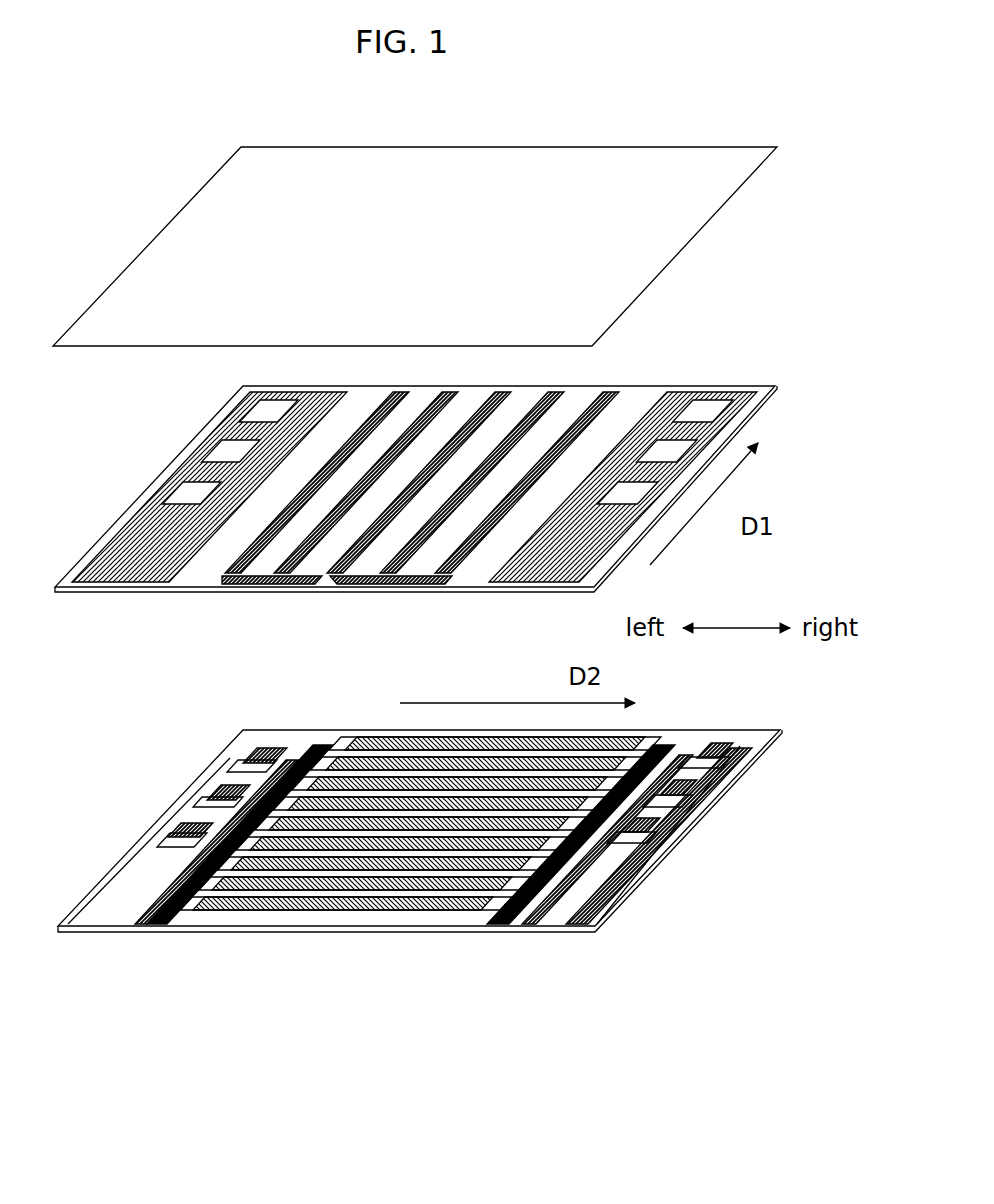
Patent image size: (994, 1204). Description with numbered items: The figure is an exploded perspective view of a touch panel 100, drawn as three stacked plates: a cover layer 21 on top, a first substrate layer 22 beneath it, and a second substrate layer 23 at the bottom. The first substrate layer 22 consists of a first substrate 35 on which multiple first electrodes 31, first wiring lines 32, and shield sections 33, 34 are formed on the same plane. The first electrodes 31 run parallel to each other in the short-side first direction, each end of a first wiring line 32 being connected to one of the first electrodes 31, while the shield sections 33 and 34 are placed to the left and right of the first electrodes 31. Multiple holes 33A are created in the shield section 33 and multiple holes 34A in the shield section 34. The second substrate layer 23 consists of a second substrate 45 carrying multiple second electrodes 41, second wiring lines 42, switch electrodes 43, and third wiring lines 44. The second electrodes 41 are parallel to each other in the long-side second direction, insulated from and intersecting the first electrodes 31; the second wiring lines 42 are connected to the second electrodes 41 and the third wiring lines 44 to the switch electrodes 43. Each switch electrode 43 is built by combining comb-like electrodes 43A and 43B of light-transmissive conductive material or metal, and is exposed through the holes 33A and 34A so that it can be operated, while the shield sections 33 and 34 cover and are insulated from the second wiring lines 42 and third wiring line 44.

The touch panel 100 is at (497, 133).
The cover layer 21 is at (692, 167).
The first substrate layer 22 is at (115, 643).
The second substrate layer 23 is at (235, 977).
The first electrodes 31 is at (460, 562).
The first wiring lines 32 is at (396, 575).
The shield section 33 is at (140, 568).
The holes 33A is at (263, 415).
The shield section 34 is at (535, 568).
The holes 34A is at (707, 413).
The first substrate 35 is at (197, 572).
The second electrodes 41 is at (358, 925).
The second wiring lines 42 is at (498, 925).
The switch electrode 43 is at (610, 938).
The comb-like electrode 43A is at (645, 838).
The comb-like electrode 43B is at (623, 840).
The third wiring line 44 is at (545, 925).
The second substrate 45 is at (283, 925).